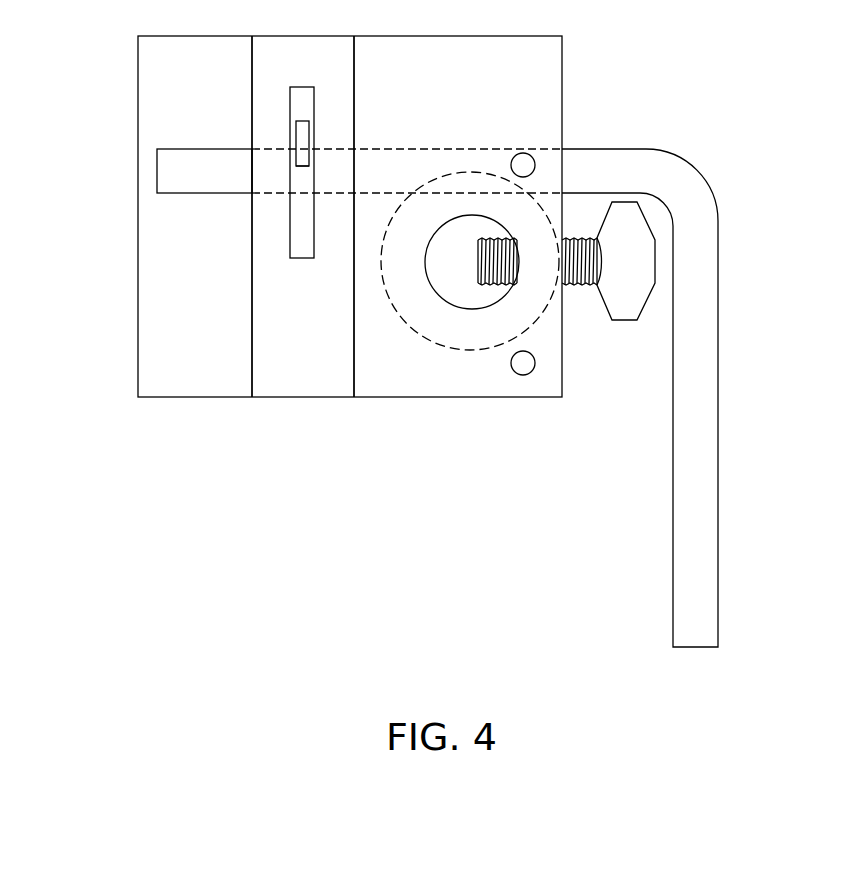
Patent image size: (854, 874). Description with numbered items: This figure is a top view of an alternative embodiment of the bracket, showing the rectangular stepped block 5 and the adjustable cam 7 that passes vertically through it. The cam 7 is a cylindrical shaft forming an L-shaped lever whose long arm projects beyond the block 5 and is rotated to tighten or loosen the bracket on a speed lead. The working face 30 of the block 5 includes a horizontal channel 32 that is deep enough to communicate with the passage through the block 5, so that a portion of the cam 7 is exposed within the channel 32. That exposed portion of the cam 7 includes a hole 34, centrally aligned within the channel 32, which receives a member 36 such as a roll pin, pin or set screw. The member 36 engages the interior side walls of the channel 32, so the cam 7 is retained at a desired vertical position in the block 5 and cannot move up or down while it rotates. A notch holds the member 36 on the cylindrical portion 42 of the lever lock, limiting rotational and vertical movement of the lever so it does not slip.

The rectangular stepped block 5 is at (324, 359).
The adjustable cam 7 is at (128, 150).
The working face 30 is at (296, 310).
The horizontal channel 32 is at (302, 93).
The hole 34 is at (303, 167).
The member 36 is at (293, 133).
The cylindrical portion 42 is at (190, 187).